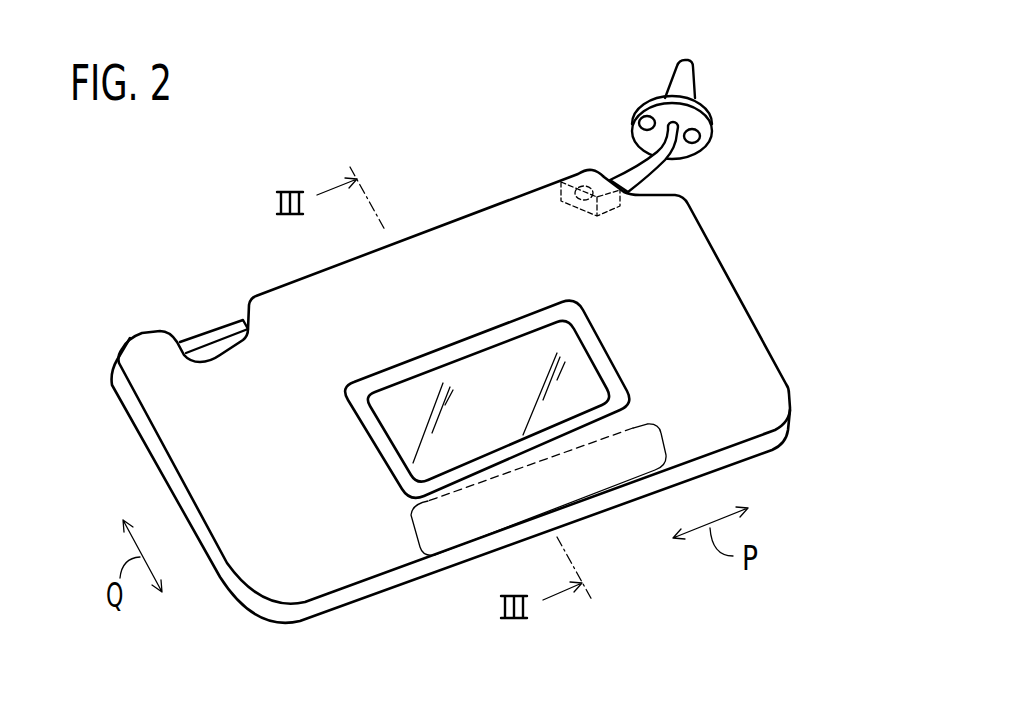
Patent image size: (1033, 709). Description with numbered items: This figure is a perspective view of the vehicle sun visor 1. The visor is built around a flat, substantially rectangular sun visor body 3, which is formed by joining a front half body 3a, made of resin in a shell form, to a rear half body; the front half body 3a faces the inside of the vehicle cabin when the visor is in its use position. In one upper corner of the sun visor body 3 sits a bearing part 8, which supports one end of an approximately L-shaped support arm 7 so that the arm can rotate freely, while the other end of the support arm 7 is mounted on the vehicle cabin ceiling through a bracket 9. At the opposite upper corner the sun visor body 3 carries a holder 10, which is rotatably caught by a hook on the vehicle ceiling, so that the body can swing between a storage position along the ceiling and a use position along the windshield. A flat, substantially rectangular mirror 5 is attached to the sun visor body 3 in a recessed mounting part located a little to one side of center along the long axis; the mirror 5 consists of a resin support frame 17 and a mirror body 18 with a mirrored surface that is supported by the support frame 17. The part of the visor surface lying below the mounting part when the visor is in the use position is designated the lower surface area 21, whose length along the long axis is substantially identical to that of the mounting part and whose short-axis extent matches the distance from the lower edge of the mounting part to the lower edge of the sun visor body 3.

The vehicle sun visor 1 is at (723, 225).
The sun visor body 3 is at (737, 270).
The front half body 3a is at (723, 335).
The mirror 5 is at (442, 518).
The support arm 7 is at (668, 172).
The bearing part 8 is at (557, 200).
The bracket 9 is at (700, 106).
The holder 10 is at (207, 327).
The support frame 17 is at (378, 440).
The mirror body 18 is at (400, 437).
The lower surface area 21 is at (573, 483).